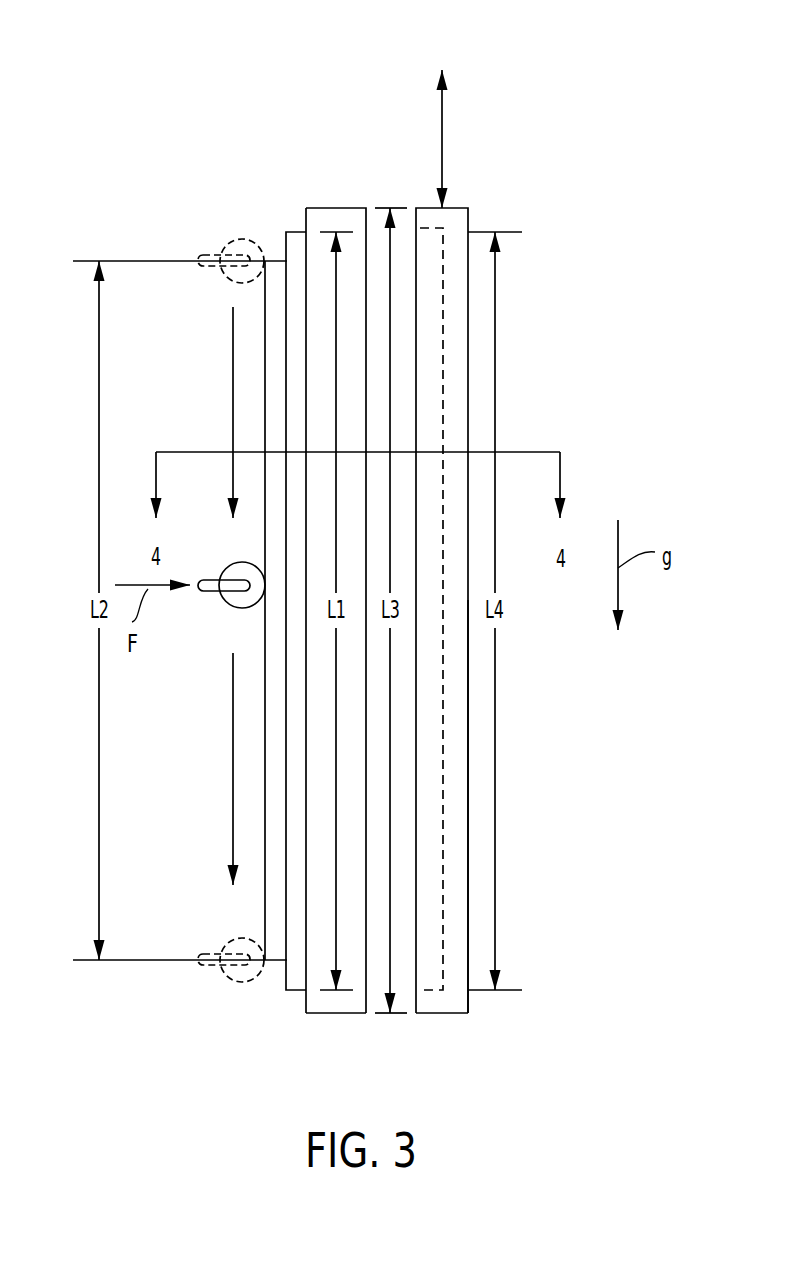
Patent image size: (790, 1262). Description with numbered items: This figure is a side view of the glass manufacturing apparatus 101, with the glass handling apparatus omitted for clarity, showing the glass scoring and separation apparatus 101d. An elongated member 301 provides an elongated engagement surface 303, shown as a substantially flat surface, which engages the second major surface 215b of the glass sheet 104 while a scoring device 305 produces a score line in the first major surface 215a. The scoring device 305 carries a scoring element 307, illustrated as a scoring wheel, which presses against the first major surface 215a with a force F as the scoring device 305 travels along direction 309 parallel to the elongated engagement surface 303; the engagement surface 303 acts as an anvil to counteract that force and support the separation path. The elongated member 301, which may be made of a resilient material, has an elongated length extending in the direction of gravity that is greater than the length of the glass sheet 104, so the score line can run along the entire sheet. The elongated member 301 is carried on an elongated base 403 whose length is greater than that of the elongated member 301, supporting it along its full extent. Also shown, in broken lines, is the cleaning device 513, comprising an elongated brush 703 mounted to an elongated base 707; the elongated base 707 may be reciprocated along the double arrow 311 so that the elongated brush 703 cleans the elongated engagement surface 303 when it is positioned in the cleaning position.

The glass manufacturing apparatus 101 is at (517, 559).
The glass scoring and separation apparatus 101d is at (532, 188).
The elongated member 301 is at (298, 200).
The elongated engagement surface 303 is at (292, 293).
The scoring device 305 is at (190, 629).
The scoring element 307 is at (235, 607).
The direction of travel 309 is at (233, 415).
The double arrow 311 is at (443, 148).
The first major surface 215a is at (250, 733).
The second major surface 215b is at (297, 788).
The glass sheet 104 is at (277, 863).
The elongated brush 703 is at (443, 833).
The elongated base 707 is at (468, 868).
The elongated base 403 is at (336, 1013).
The cleaning device 513 is at (467, 1028).